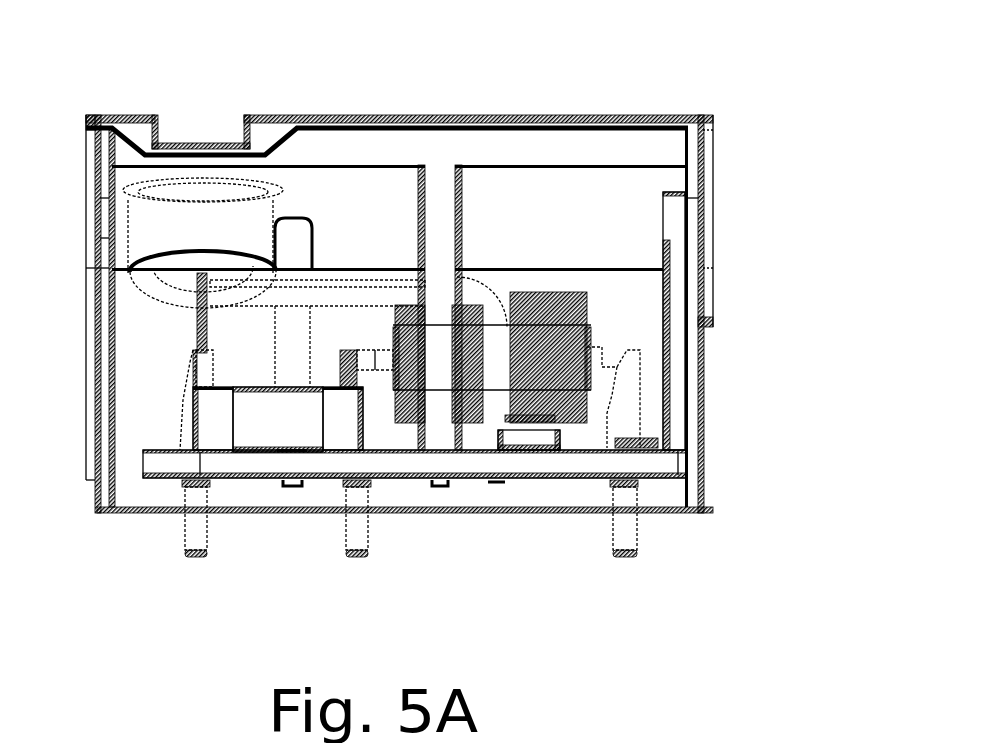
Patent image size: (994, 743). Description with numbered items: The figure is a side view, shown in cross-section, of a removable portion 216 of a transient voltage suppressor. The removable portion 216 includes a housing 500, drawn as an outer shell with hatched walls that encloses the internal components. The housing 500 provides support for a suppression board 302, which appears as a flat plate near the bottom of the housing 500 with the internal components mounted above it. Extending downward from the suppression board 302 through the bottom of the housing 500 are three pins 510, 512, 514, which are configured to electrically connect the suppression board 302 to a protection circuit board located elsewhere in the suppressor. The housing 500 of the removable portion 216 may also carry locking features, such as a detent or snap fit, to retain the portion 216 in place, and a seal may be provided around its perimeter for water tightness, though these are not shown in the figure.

The removable portion 216 is at (744, 60).
The housing 500 is at (313, 122).
The suppression board 302 is at (168, 463).
The pin 510 is at (197, 562).
The pin 512 is at (360, 567).
The pin 514 is at (630, 563).